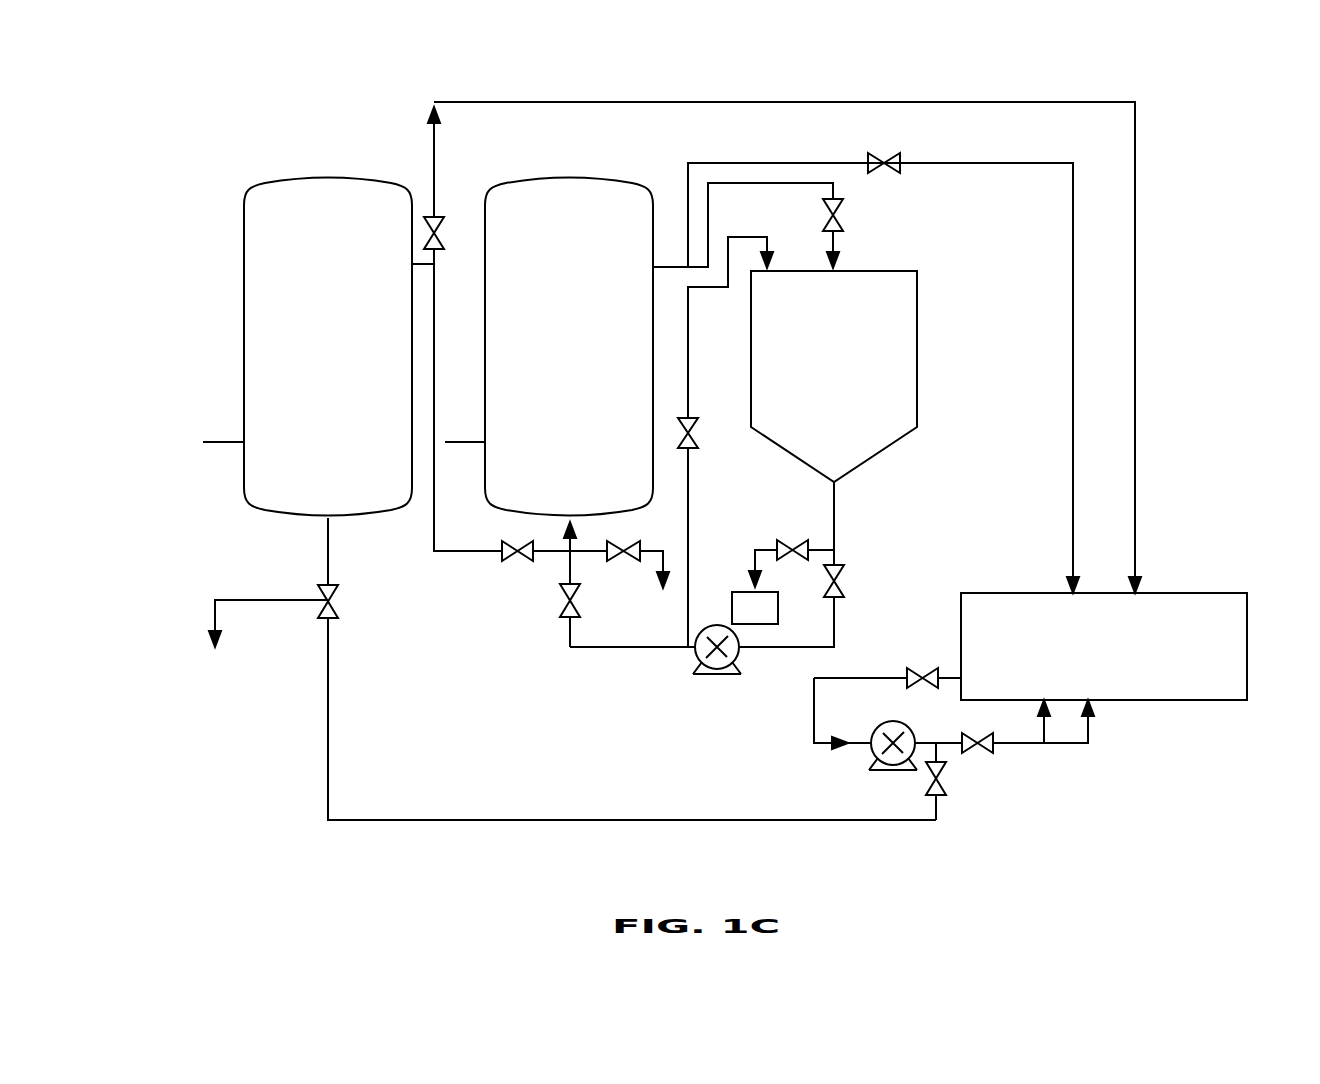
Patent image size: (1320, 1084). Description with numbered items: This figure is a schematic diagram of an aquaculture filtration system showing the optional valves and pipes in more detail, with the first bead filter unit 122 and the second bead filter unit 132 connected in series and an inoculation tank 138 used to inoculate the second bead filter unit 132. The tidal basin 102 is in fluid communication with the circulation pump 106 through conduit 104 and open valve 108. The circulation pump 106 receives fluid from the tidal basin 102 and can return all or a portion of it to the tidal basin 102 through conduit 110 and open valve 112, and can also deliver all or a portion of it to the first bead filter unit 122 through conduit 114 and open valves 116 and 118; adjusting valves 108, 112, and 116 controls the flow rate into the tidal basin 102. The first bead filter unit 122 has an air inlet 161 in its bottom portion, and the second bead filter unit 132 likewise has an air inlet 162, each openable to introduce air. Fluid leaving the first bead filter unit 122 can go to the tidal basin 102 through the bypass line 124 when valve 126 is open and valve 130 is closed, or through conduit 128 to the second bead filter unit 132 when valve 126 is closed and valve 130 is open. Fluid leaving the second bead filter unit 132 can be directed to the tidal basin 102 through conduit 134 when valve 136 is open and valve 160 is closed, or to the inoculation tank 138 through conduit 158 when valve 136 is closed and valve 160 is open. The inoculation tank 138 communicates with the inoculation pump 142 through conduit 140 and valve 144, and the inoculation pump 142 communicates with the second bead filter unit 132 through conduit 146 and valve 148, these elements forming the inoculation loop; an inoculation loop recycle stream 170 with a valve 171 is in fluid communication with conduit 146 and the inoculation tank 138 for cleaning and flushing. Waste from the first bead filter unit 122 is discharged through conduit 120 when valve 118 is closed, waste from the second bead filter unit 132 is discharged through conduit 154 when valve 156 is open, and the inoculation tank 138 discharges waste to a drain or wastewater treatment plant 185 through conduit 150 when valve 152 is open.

The tidal basin 102 is at (1124, 653).
The conduit 104 is at (812, 713).
The circulation pump 106 is at (890, 721).
The valve 108 is at (927, 668).
The conduit 110 is at (1030, 746).
The valve 112 is at (978, 756).
The conduit 114 is at (777, 822).
The valve 116 is at (945, 775).
The valve 118 is at (336, 611).
The conduit 120 is at (283, 598).
The first bead filter unit 122 is at (345, 367).
The bypass line 124 is at (546, 100).
The valve 126 is at (440, 240).
The conduit 128 is at (434, 535).
The valve 130 is at (514, 565).
The second bead filter unit 132 is at (590, 367).
The conduit 134 is at (781, 161).
The valve 136 is at (880, 155).
The inoculation tank 138 is at (848, 368).
The conduit 140 is at (838, 531).
The inoculation pump 142 is at (724, 678).
The valve 144 is at (840, 579).
The conduit 146 is at (644, 650).
The valve 148 is at (563, 595).
The conduit 150 is at (764, 548).
The valve 152 is at (798, 542).
The conduit 154 is at (659, 557).
The valve 156 is at (628, 543).
The conduit 158 is at (741, 185).
The valve 160 is at (845, 218).
The air inlet 161 is at (226, 440).
The air inlet 162 is at (468, 441).
The inoculation loop recycle stream 170 is at (692, 360).
The valve 171 is at (694, 434).
The drain or wastewater treatment plant 185 is at (772, 619).